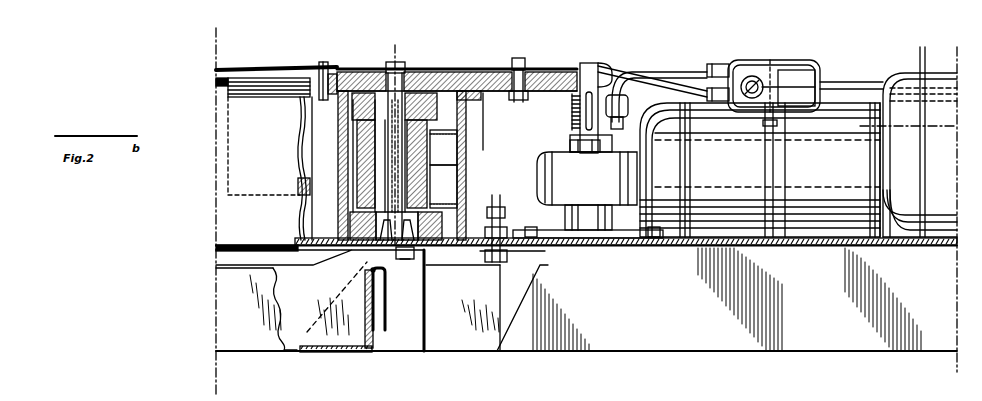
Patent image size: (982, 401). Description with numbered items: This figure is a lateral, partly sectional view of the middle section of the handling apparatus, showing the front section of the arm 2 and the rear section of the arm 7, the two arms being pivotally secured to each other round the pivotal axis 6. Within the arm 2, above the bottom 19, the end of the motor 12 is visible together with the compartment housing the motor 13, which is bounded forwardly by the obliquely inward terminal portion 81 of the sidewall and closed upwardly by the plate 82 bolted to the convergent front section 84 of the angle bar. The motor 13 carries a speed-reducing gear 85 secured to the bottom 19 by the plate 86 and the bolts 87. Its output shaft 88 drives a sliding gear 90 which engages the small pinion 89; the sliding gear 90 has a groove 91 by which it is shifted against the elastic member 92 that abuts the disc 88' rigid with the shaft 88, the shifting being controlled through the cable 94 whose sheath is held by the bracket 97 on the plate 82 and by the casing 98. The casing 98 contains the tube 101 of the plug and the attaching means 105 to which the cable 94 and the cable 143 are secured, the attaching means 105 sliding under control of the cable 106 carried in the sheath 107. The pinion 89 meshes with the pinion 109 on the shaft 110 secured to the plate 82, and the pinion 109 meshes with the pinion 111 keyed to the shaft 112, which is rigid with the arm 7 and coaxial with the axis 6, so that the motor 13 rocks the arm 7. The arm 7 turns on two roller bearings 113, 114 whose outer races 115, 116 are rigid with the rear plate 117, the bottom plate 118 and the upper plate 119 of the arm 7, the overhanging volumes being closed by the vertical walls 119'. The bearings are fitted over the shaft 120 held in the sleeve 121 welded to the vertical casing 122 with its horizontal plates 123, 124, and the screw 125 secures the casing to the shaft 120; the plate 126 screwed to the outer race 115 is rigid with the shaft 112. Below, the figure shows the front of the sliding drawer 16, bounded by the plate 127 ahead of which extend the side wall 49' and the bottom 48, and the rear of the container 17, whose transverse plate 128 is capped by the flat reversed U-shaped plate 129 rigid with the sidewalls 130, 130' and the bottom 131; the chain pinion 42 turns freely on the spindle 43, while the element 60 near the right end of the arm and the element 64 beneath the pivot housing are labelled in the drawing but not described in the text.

The arm 2 is at (865, 110).
The pivotal axis 6 is at (395, 61).
The arm 7 is at (250, 107).
The motor 12 is at (937, 248).
The motor 13 is at (829, 248).
The sliding drawer 16 is at (459, 337).
The container 17 is at (263, 338).
The bottom 19 is at (774, 248).
The pinion 42 is at (485, 263).
The spindle 43 is at (500, 263).
The bottom 48 is at (363, 352).
The side wall 49' is at (389, 361).
The ring 60 is at (880, 248).
The bolt 64 is at (490, 223).
The terminal portion of sidewall 81 is at (467, 176).
The plate 82 is at (508, 135).
The front section of angle bar 84 is at (470, 118).
The speed-reducing gear 85 is at (615, 176).
The plate 86 is at (600, 247).
The bolts 87 is at (654, 247).
The output shaft 88 is at (605, 57).
The disc 88' is at (576, 143).
The pinion 89 is at (581, 70).
The sliding gear 90 is at (572, 115).
The groove 91 is at (584, 110).
The elastic member 92 is at (572, 130).
The cable 94 is at (673, 78).
The bracket 97 is at (616, 98).
The casing 98 is at (738, 64).
The tube 101 is at (757, 97).
The attaching means 105 is at (770, 128).
The cable 106 is at (800, 84).
The sheath 107 is at (848, 84).
The pinion 109 is at (482, 70).
The shaft 110 is at (524, 60).
The pinion 111 is at (460, 72).
The shaft 112 is at (410, 70).
The roller bearing 113 is at (377, 72).
The roller bearing 114 is at (397, 248).
The outer race 115 is at (335, 63).
The outer race 116 is at (372, 252).
The rear plate 117 is at (330, 132).
The bottom plate 118 is at (300, 237).
The upper plate 119 is at (289, 47).
The vertical walls 119' is at (423, 178).
The shaft 120 is at (378, 178).
The sleeve 121 is at (358, 183).
The casing 122 is at (358, 163).
The horizontal plate 123 is at (443, 147).
The horizontal plate 124 is at (443, 186).
The screw 125 is at (358, 151).
The plate 126 is at (437, 72).
The plate 127 is at (425, 353).
The transverse vertical plate 128 is at (366, 310).
The U-shaped plate 129 is at (376, 270).
The sidewall 130 is at (215, 287).
The sidewall 130' is at (325, 307).
The bottom 131 is at (300, 353).
The cable 143 is at (726, 70).